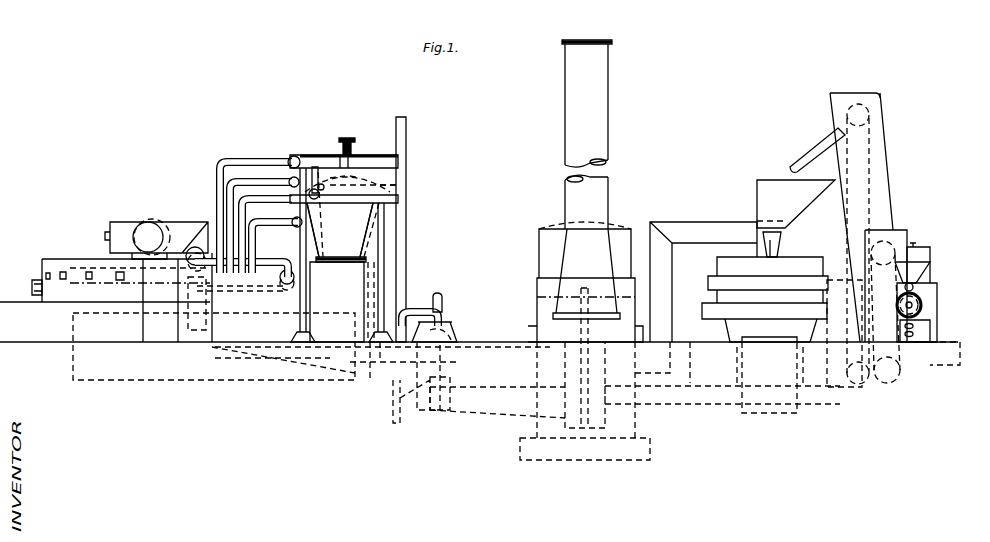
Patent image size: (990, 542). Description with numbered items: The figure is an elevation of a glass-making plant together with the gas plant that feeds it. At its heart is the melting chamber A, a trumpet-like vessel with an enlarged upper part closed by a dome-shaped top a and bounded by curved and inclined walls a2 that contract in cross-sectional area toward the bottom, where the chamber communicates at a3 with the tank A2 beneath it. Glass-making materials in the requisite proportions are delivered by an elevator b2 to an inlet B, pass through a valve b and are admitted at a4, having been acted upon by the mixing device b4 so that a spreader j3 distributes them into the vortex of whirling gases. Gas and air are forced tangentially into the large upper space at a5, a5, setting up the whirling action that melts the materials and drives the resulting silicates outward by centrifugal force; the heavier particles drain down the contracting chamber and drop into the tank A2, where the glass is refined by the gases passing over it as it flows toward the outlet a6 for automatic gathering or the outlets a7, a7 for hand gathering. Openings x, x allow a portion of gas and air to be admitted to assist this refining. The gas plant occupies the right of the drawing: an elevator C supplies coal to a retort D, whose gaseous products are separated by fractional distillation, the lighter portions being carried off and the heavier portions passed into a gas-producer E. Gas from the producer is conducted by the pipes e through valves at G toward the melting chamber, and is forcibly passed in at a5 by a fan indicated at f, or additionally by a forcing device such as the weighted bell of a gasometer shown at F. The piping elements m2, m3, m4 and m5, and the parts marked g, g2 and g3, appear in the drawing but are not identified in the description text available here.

The melting chamber A is at (343, 257).
The tank A2 is at (340, 294).
The inlet B is at (343, 148).
The dome-shaped top a is at (362, 165).
The curved and inclined walls a2 is at (335, 227).
The outlet a3 is at (372, 253).
The admission point for glass-making materials a4 is at (327, 157).
The gas and air inlets a5 is at (380, 184).
The outlet for automatic gathering a6 is at (32, 287).
The outlets for hand gathering a7 is at (88, 272).
The valve b is at (349, 158).
The elevator b2 is at (398, 150).
The mixing device b4 is at (337, 183).
The spreader j3 is at (353, 183).
The pipe m2 is at (259, 226).
The pipe m3 is at (237, 178).
The pipe m4 is at (290, 199).
The pipe fitting m5 is at (294, 157).
The motor g is at (148, 236).
The gear box g2 is at (188, 321).
The drive shaft g3 is at (481, 412).
The openings x is at (180, 279).
The fan f is at (430, 318).
The valves G is at (437, 328).
The pipes e is at (498, 345).
The gas-producer E is at (765, 299).
The weighted bell of a gasometer F is at (540, 252).
The elevator C is at (897, 276).
The retort D is at (937, 309).